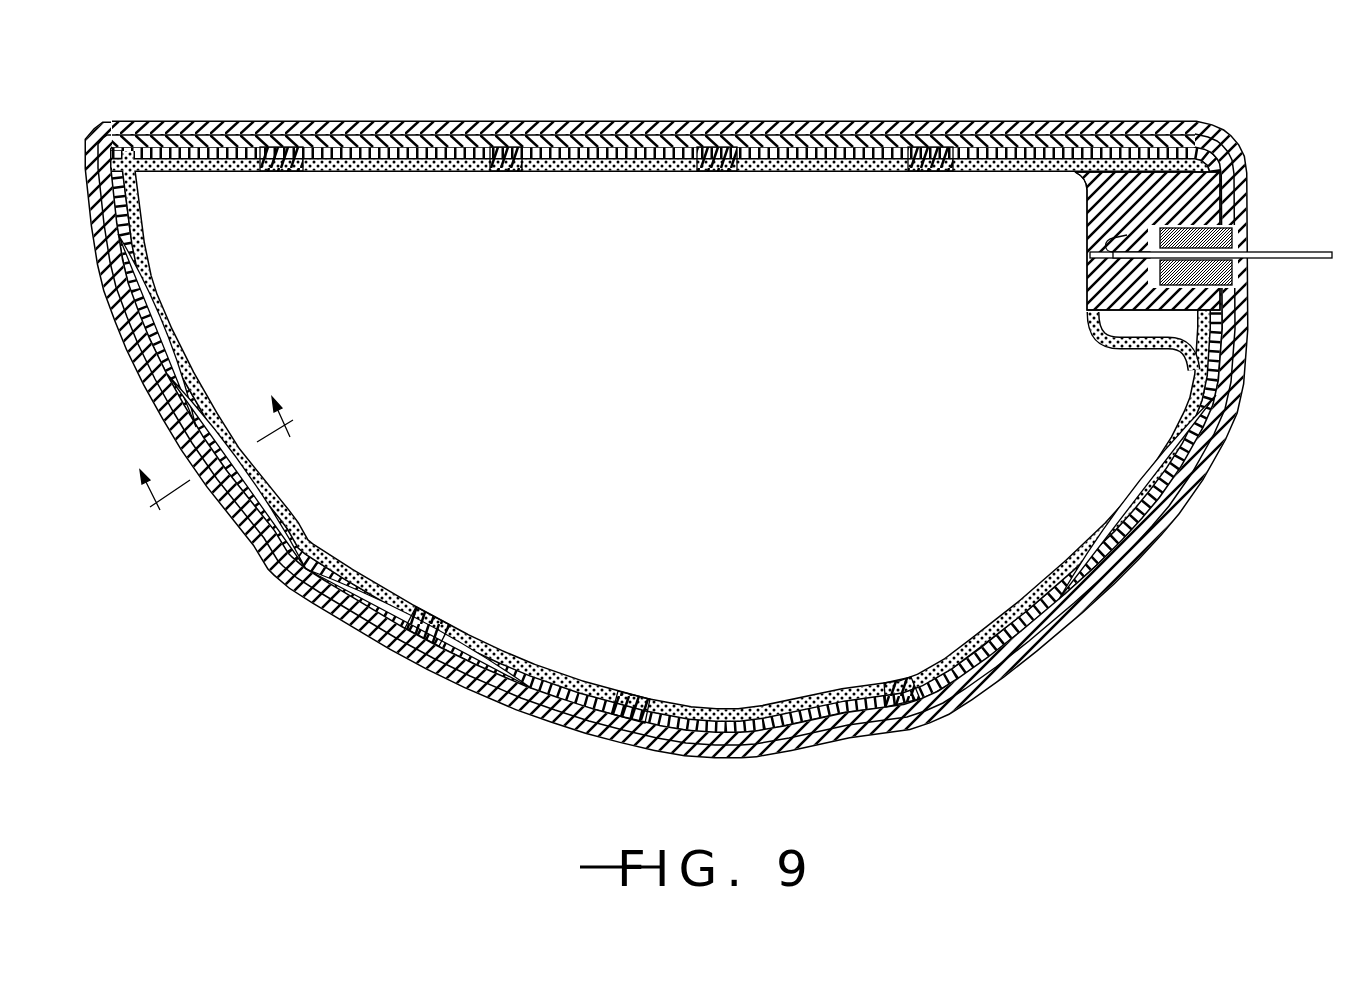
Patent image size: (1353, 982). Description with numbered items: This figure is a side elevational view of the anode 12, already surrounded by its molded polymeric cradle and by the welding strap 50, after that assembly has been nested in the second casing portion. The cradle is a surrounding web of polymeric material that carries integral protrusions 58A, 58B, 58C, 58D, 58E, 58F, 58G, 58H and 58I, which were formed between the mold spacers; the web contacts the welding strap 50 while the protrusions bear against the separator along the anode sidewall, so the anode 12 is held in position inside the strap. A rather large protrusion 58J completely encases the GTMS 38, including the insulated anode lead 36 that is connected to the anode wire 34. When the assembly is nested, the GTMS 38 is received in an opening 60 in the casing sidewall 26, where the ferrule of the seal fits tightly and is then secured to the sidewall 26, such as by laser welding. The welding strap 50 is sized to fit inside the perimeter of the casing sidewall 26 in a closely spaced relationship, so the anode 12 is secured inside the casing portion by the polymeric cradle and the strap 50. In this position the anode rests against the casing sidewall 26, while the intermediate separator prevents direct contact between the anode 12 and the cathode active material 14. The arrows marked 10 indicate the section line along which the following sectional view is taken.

The section line 10 is at (224, 464).
The anode 12 is at (872, 193).
The cathode active material 14 is at (160, 178).
The surrounding sidewall 26 is at (830, 125).
The anode wire 34 is at (1092, 280).
The insulated anode lead 36 is at (1302, 258).
The GTMS 38 is at (1258, 238).
The welding strap 50 is at (1052, 135).
The integral protrusion 58A is at (930, 172).
The integral protrusion 58B is at (712, 170).
The integral protrusion 58C is at (490, 172).
The integral protrusion 58D is at (280, 172).
The integral protrusion 58E is at (203, 392).
The integral protrusion 58F is at (417, 625).
The integral protrusion 58G is at (620, 714).
The integral protrusion 58H is at (905, 673).
The integral protrusion 58I is at (1148, 462).
The large protrusion 58J is at (1170, 192).
The opening 60 is at (1243, 278).